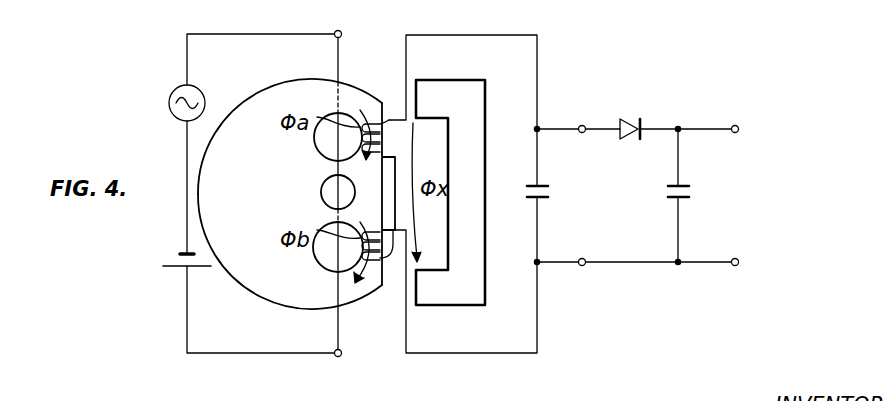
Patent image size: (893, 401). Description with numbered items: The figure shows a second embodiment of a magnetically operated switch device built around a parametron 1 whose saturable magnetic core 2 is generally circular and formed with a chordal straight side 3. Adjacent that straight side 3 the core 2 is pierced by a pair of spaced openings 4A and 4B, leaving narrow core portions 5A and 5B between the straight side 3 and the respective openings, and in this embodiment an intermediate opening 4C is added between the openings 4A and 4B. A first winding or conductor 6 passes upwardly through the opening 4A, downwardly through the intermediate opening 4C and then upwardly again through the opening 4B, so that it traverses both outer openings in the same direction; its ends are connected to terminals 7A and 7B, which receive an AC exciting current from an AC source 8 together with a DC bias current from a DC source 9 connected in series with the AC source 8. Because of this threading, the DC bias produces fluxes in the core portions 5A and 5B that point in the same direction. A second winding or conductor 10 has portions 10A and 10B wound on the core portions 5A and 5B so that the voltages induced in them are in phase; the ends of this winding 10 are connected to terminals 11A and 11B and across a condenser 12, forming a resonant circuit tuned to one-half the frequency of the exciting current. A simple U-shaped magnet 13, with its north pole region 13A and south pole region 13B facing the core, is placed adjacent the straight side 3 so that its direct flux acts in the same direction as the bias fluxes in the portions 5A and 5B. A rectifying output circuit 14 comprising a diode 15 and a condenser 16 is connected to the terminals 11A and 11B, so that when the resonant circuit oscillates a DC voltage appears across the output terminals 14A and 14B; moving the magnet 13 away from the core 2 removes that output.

The parametron 1 is at (249, 103).
The saturable magnetic core 2 is at (270, 305).
The chordal straight side 3 is at (383, 187).
The opening 4A is at (320, 152).
The opening 4B is at (320, 262).
The intermediate opening 4C is at (322, 193).
The narrow core portion 5A is at (372, 122).
The narrow core portion 5B is at (366, 262).
The first winding or conductor 6 is at (336, 58).
The terminal 7A is at (341, 31).
The terminal 7B is at (342, 356).
The AC source 8 is at (197, 87).
The DC source 9 is at (176, 268).
The second winding or conductor 10 is at (384, 152).
The winding portion 10A is at (389, 118).
The winding portion 10B is at (402, 246).
The terminal 11A is at (583, 125).
The terminal 11B is at (578, 265).
The condenser 12 is at (527, 194).
The U-shaped magnet 13 is at (470, 172).
The north pole of magnet 13A is at (450, 100).
The south pole of magnet 13B is at (443, 293).
The rectifying output circuit 14 is at (683, 183).
The output terminal 14A is at (734, 125).
The output terminal 14B is at (735, 266).
The diode 15 is at (629, 140).
The condenser 16 is at (666, 196).